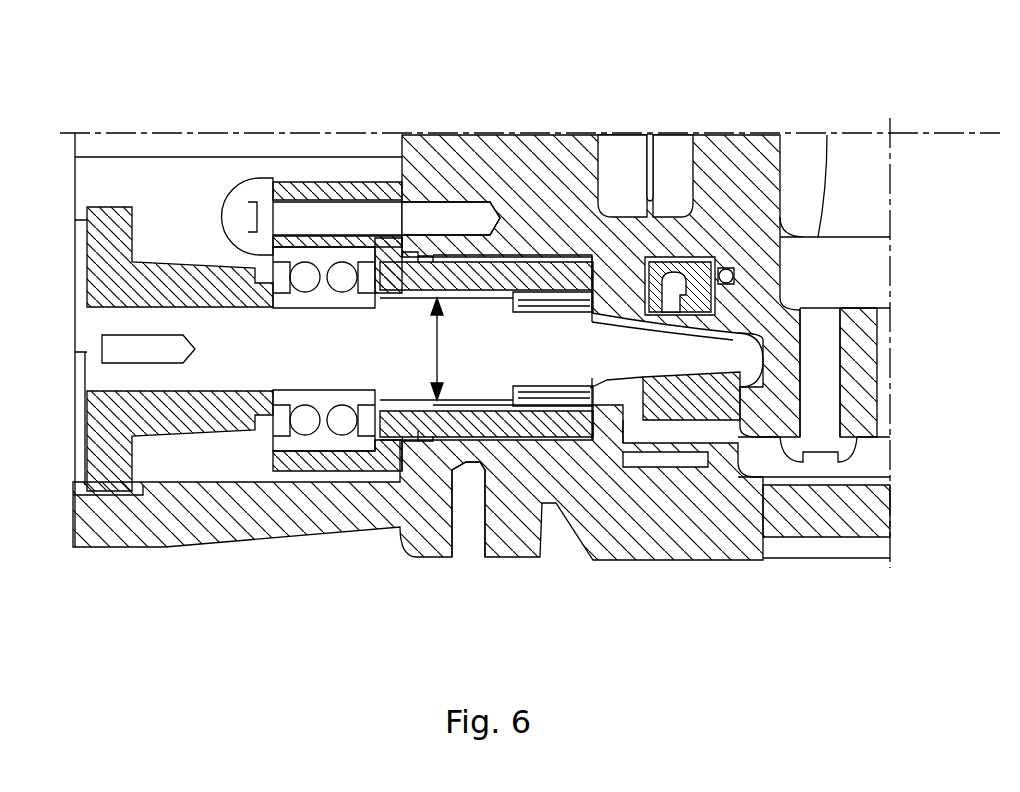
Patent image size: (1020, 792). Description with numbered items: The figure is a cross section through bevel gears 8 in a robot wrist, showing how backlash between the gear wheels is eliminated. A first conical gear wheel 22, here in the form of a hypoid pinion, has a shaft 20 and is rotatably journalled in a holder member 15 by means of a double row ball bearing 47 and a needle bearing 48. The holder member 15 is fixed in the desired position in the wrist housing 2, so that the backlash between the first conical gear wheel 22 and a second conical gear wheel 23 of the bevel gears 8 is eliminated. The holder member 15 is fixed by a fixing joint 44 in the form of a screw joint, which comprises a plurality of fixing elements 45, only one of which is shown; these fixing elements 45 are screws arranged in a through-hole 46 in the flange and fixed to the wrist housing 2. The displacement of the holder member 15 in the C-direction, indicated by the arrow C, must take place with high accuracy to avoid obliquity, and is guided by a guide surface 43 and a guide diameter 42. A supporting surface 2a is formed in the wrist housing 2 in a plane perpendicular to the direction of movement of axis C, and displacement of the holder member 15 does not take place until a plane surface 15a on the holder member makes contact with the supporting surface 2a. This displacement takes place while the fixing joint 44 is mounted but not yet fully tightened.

The wrist housing 2 is at (495, 165).
The supporting surface 2a is at (440, 460).
The bevel gears 8 is at (697, 382).
The holder member 15 is at (376, 460).
The plane surface 15a is at (390, 457).
The shaft 20 is at (250, 358).
The first conical gear wheel 22 is at (633, 357).
The second conical gear wheel 23 is at (763, 413).
The guide diameter 42 is at (422, 258).
The retaining ring 43 is at (405, 254).
The fixing joint 44 is at (283, 180).
The fixing elements 45 is at (350, 212).
The through-hole 46 is at (320, 190).
The double row ball bearing 47 is at (304, 422).
The needle bearing 48 is at (552, 296).
The C-direction C is at (446, 349).